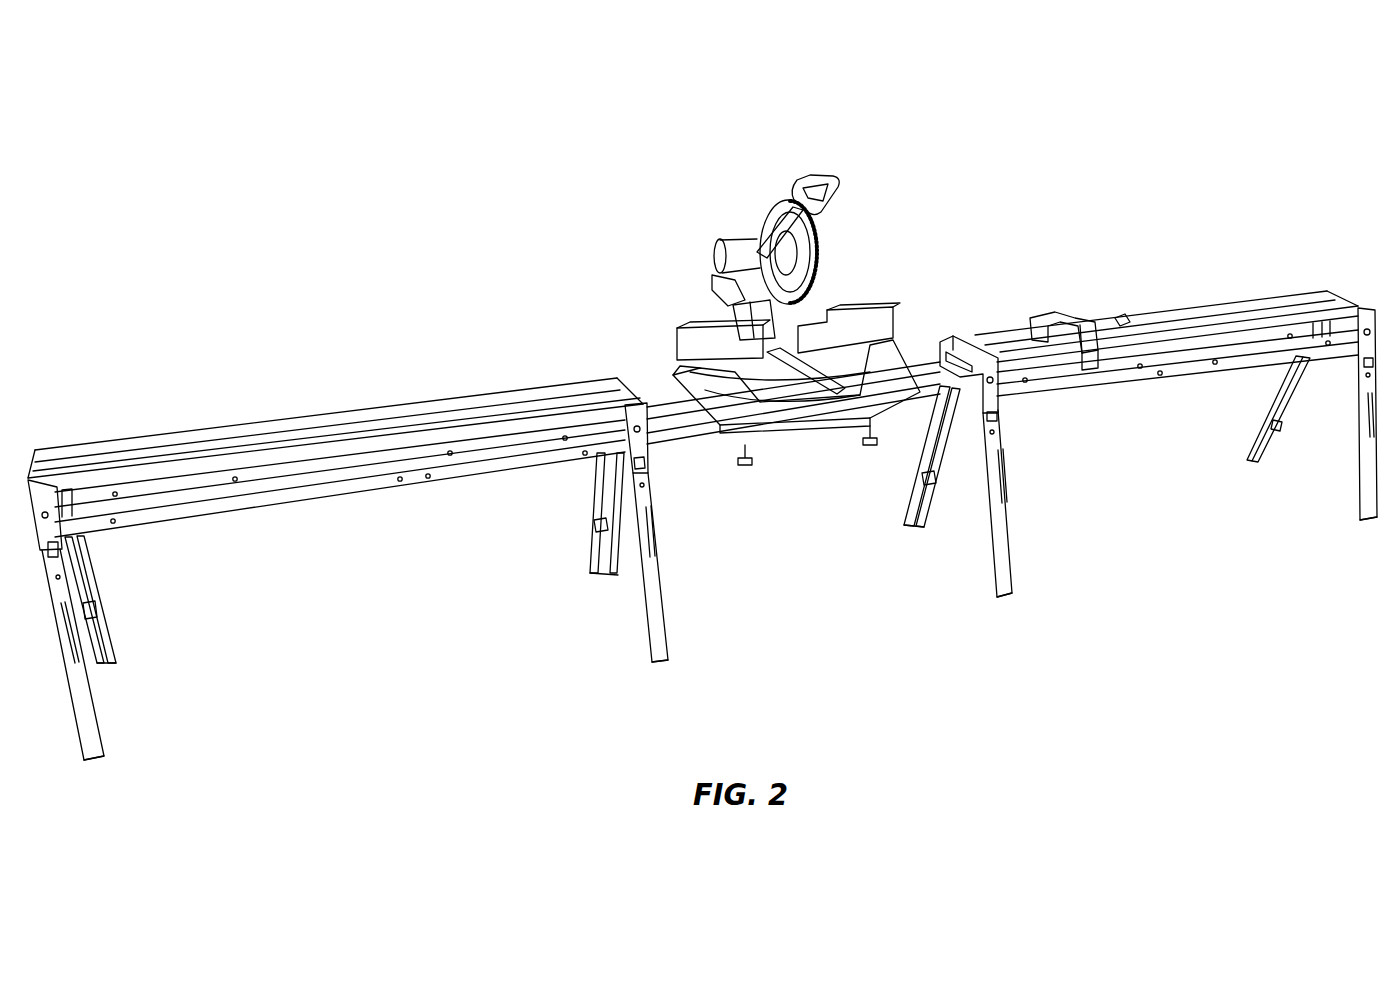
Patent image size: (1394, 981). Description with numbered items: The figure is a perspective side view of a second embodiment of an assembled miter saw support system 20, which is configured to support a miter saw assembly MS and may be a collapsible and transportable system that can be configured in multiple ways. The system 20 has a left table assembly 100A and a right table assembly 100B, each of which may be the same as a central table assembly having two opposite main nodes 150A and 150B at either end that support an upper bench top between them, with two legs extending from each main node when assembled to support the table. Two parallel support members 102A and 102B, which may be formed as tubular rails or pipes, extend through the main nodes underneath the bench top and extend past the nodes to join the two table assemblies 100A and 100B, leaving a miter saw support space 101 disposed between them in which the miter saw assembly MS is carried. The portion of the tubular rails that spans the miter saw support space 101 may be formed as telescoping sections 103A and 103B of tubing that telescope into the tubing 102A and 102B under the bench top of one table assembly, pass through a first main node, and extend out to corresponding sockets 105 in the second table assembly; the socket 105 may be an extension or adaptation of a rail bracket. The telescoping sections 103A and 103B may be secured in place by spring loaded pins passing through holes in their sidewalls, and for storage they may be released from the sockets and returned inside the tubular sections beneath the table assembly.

The system 20 is at (906, 132).
The left table assembly 100A is at (315, 403).
The right table assembly 100B is at (1143, 297).
The miter saw support space 101 is at (921, 345).
The parallel support member 102A is at (487, 463).
The parallel support member 102B is at (263, 470).
The telescoping section 103A is at (687, 435).
The telescoping section 103B is at (661, 400).
The socket 105 is at (966, 414).
The main node 150A is at (52, 530).
The main node 150B is at (640, 443).
The miter saw assembly MS is at (741, 250).